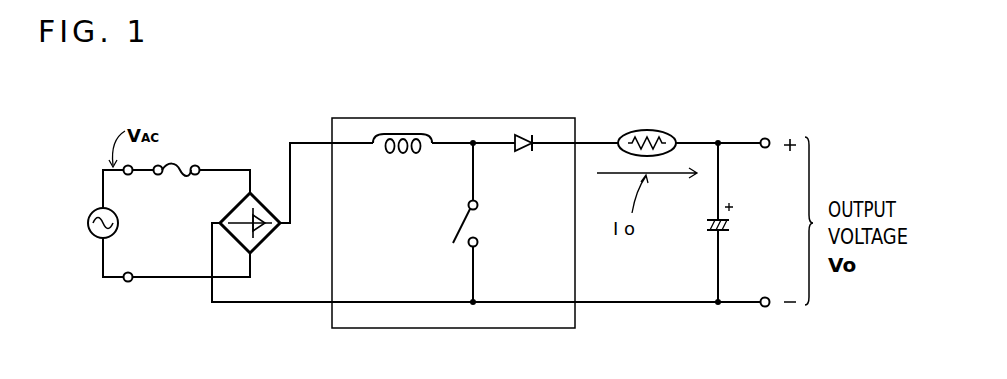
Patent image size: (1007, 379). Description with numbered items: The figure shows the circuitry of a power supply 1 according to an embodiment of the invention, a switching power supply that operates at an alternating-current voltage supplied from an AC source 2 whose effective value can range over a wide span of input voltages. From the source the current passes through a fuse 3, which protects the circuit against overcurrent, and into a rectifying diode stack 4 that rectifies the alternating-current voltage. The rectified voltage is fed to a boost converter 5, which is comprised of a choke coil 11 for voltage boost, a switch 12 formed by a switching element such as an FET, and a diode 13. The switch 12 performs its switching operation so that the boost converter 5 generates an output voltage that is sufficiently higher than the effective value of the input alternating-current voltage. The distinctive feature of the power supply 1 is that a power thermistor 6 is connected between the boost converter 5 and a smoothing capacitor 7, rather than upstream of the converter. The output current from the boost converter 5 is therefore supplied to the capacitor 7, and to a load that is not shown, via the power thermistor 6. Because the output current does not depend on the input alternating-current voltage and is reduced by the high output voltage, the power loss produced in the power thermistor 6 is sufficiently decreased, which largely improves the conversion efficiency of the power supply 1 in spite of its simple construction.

The power supply 1 is at (465, 100).
The AC power source 2 is at (94, 211).
The fuse 3 is at (182, 162).
The rectifying diode stack 4 is at (262, 243).
The boost converter 5 is at (543, 118).
The power thermistor 6 is at (650, 130).
The smoothing capacitor 7 is at (712, 233).
The choke coil 11 is at (400, 150).
The switch 12 is at (462, 229).
The diode 13 is at (526, 152).